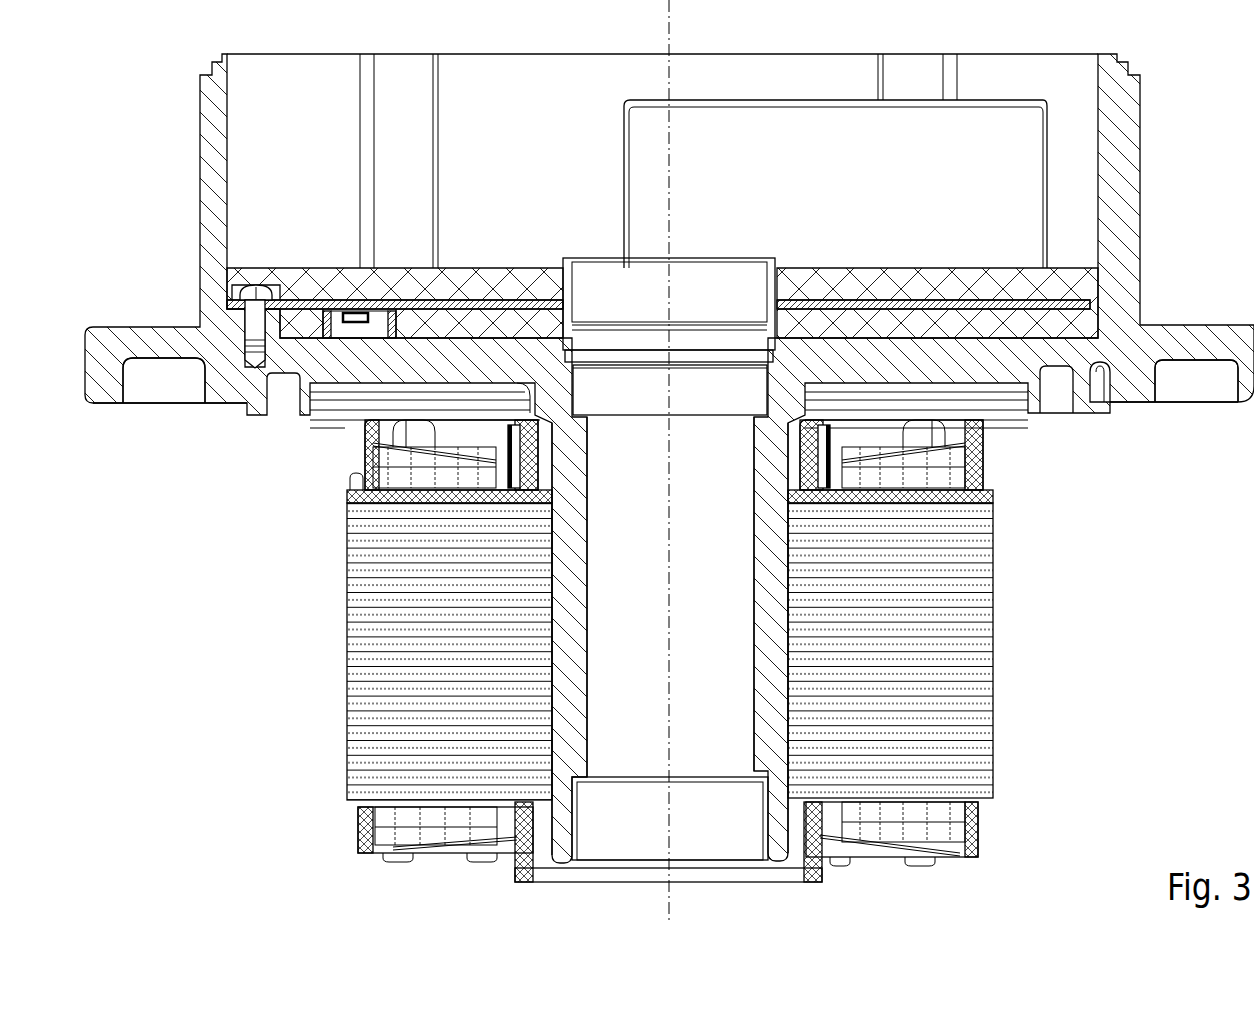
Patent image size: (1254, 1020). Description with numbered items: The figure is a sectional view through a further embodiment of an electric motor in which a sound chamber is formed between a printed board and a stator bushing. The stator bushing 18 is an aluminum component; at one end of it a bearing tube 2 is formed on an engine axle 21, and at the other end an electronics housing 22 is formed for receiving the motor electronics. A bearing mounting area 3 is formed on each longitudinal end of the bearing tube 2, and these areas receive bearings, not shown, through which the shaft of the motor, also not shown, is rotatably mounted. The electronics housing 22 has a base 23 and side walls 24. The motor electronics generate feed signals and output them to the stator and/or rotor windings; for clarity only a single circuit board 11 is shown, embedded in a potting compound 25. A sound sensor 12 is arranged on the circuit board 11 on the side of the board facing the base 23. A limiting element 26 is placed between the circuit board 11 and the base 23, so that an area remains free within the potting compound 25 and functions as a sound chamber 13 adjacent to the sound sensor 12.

The bearing tube 2 is at (590, 613).
The bearing mounting area 3 is at (580, 378).
The circuit board 11 is at (281, 307).
The sound sensor 12 is at (355, 312).
The sound chamber 13 is at (350, 332).
The stator bushing 18 is at (103, 333).
The engine axle 21 is at (667, 884).
The electronics housing 22 is at (574, 160).
The base 23 is at (468, 340).
The side walls 24 is at (208, 155).
The potting compound 25 is at (528, 332).
The limiting element 26 is at (328, 311).